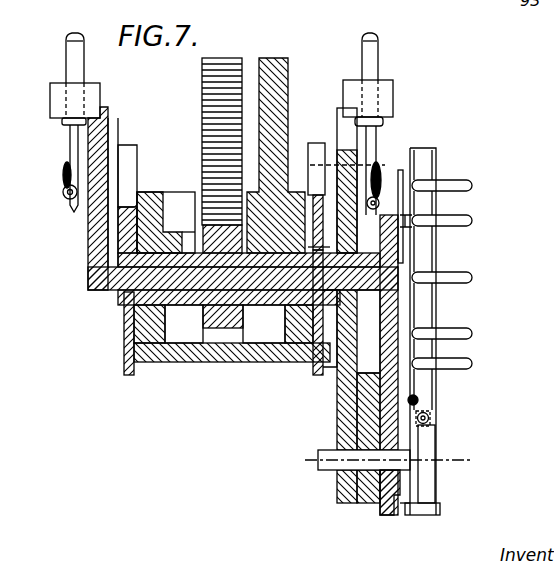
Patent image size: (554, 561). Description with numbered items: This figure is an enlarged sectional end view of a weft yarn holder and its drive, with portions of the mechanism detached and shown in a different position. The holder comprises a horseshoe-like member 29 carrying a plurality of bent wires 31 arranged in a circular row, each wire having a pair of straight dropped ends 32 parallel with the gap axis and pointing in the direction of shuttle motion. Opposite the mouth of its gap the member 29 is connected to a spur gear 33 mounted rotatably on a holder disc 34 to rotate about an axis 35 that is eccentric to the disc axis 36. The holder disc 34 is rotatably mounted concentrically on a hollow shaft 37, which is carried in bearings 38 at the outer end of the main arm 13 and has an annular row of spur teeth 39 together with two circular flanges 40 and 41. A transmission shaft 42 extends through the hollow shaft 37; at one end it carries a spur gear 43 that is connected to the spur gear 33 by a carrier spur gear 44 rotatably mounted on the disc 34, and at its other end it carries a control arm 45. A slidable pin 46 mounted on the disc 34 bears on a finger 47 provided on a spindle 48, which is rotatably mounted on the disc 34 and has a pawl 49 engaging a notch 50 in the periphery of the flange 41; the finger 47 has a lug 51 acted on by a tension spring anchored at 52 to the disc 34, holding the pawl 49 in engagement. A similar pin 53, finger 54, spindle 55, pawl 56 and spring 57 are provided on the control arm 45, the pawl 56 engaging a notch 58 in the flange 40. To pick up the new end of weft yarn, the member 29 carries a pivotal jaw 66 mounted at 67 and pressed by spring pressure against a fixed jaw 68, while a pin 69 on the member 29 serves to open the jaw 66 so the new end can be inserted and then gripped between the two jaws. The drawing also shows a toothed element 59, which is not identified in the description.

The main arm 13 is at (270, 92).
The horseshoe-like member 29 is at (418, 153).
The bent wires 31 is at (410, 207).
The dropped ends 32 is at (447, 186).
The spur gear 33 is at (403, 493).
The holder disc 34 is at (353, 492).
The axis 35 is at (337, 457).
The disc axis 36 is at (96, 281).
The hollow shaft 37 is at (128, 305).
The bearings 38 is at (175, 325).
The spur teeth 39 is at (228, 330).
The circular flange 40 is at (128, 364).
The circular flange 41 is at (322, 365).
The transmission shaft 42 is at (135, 292).
The spur gear 43 is at (438, 276).
The carrier spur gear 44 is at (400, 348).
The control arm 45 is at (505, 277).
The slidable pin 46 is at (370, 67).
The finger 47 is at (358, 127).
The spindle 48 is at (375, 165).
The pawl 49 is at (336, 175).
The notch 50 is at (390, 256).
The lug 51 is at (374, 192).
The spring anchorage 52 is at (326, 203).
The pin 53 is at (75, 65).
The finger 54 is at (72, 148).
The spindle 55 is at (66, 170).
The pawl 56 is at (124, 163).
The spring 57 is at (64, 192).
The notch 58 is at (134, 192).
The gear 59 is at (238, 80).
The pivotal jaw 66 is at (423, 452).
The pivot mounting 67 is at (430, 420).
The fixed jaw 68 is at (432, 510).
The pin 69 is at (331, 472).